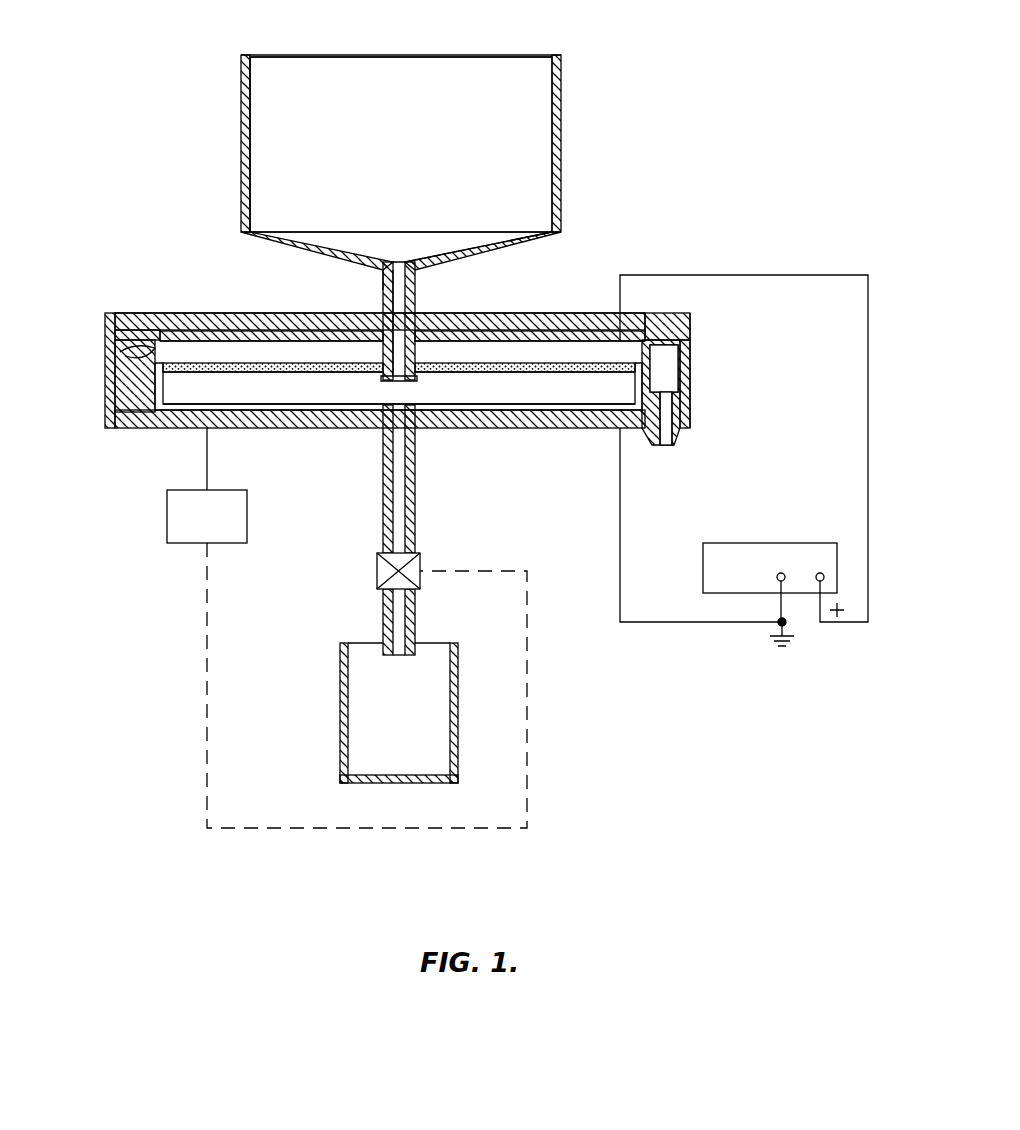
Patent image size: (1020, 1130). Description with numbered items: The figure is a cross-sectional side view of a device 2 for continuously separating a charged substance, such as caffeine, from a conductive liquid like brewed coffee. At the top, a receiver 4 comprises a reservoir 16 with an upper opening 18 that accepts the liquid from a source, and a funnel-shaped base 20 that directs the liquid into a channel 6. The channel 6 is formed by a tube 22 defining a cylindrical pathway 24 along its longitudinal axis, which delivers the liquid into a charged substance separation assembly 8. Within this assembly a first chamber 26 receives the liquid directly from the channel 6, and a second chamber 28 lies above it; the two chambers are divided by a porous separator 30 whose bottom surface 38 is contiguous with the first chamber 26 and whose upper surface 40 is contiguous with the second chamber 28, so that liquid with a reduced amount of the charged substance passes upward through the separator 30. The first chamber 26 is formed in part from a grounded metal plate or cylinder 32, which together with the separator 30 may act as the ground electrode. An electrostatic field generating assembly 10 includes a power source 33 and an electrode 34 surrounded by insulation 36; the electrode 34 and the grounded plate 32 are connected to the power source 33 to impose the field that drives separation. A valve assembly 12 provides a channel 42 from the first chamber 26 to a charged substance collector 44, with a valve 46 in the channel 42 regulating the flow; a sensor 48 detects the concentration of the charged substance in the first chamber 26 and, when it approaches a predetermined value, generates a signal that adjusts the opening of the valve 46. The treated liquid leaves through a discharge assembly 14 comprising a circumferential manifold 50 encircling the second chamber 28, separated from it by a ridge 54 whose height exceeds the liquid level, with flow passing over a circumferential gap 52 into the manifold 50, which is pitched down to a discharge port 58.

The device 2 is at (620, 142).
The receiver 4 is at (561, 75).
The channel 6 is at (380, 283).
The charged substance separation assembly 8 is at (92, 340).
The electrostatic field generating assembly 10 is at (878, 480).
The valve assembly 12 is at (340, 558).
The discharge assembly 14 is at (712, 368).
The reservoir 16 is at (396, 156).
The upper opening 18 is at (288, 57).
The funnel-shaped base 20 is at (497, 248).
The tube 22 is at (416, 310).
The cylindrical pathway 24 is at (390, 309).
The first chamber 26 is at (517, 398).
The second chamber 28 is at (523, 348).
The porous separator 30 is at (212, 370).
The metal plate or metal cylinder 32 is at (300, 428).
The power source 33 is at (722, 582).
The electrode 34 is at (190, 326).
The insulation 36 is at (256, 322).
The first or bottom surface 38 is at (467, 372).
The second or upper surface 40 is at (573, 362).
The channel 42 is at (416, 528).
The charged substance collector 44 is at (385, 728).
The valve 46 is at (377, 580).
The sensor 48 is at (192, 531).
The circumferential manifold 50 is at (135, 405).
The circumferential gap 52 is at (168, 333).
The ridge 54 is at (150, 352).
The discharge port 58 is at (662, 445).